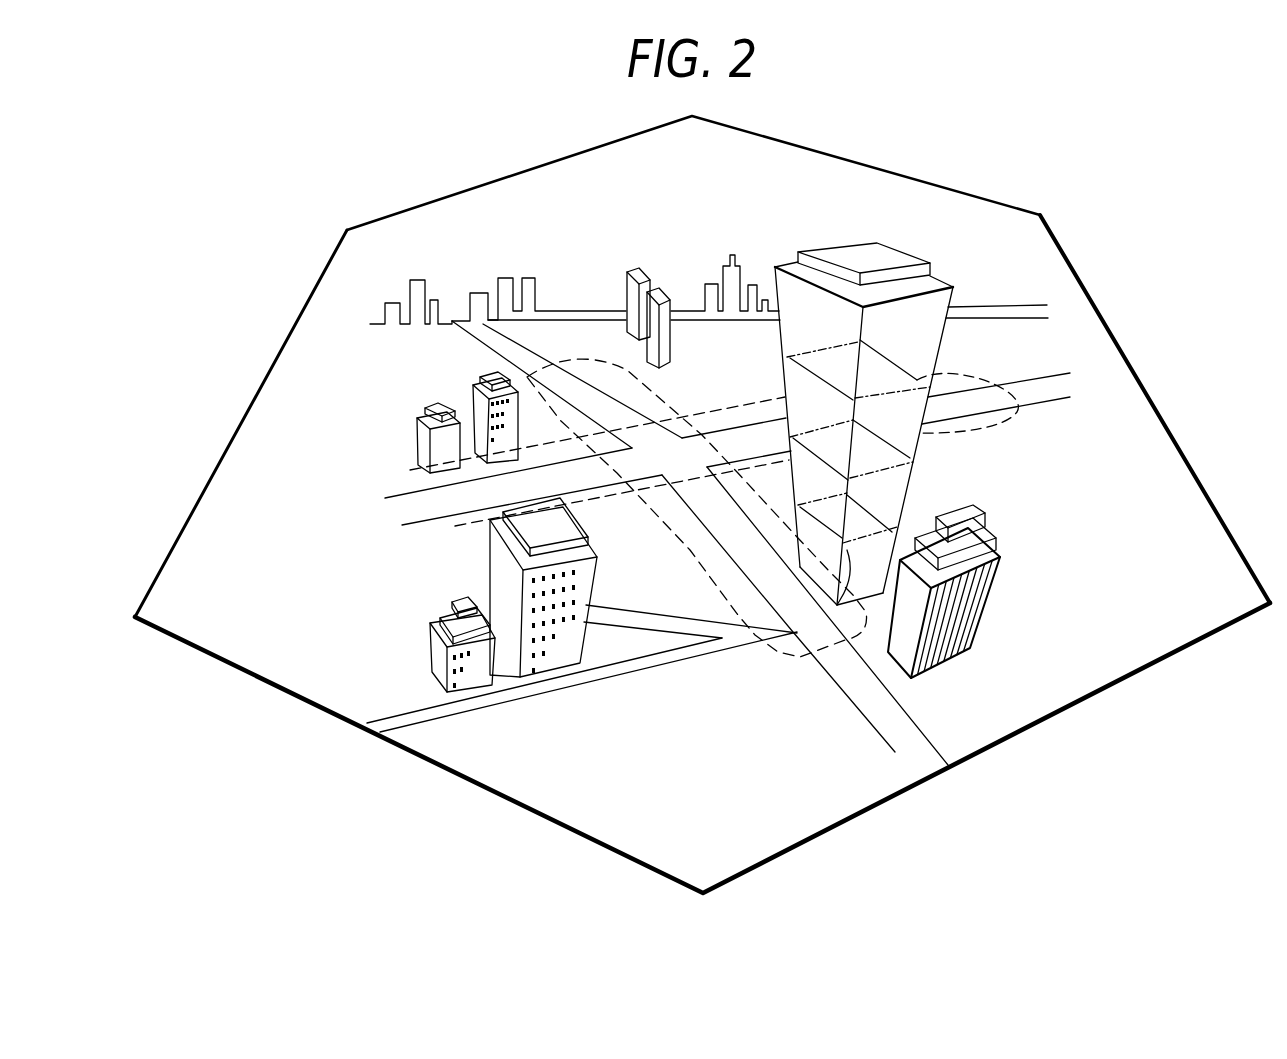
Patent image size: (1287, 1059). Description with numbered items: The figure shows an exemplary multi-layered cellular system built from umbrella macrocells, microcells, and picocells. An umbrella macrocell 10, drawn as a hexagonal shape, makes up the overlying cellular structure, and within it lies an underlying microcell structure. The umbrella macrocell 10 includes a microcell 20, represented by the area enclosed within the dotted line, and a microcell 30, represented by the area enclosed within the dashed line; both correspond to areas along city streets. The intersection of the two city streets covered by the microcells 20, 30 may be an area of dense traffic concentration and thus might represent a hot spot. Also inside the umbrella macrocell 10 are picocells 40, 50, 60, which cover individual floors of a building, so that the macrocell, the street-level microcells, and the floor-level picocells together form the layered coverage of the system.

The umbrella macrocell 10 is at (440, 766).
The microcell 20 is at (593, 356).
The microcell 30 is at (450, 504).
The picocell 40 is at (917, 380).
The picocell 50 is at (910, 458).
The picocell 60 is at (837, 605).